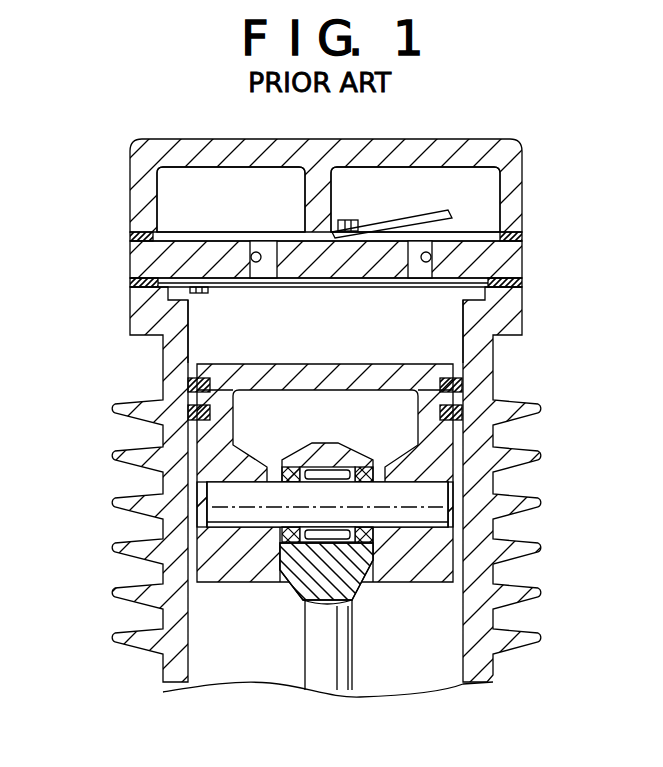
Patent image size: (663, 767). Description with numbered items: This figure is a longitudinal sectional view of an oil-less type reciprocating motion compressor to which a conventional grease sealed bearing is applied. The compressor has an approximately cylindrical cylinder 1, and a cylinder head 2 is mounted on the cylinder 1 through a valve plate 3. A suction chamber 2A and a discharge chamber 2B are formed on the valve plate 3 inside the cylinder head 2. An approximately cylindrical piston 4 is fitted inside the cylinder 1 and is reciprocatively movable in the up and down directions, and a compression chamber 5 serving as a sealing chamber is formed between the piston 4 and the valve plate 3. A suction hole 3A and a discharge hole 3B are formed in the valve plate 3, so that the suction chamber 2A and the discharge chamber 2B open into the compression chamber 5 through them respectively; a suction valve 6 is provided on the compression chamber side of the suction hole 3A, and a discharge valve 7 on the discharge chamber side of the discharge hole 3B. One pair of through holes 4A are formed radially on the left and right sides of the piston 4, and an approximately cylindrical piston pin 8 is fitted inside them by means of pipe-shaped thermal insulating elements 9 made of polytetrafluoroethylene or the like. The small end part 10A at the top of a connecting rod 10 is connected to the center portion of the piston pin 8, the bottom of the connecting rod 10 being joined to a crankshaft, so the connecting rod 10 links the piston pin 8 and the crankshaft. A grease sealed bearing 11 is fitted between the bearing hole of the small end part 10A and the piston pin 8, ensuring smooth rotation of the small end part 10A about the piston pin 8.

The cylinder 1 is at (483, 623).
The cylinder head 2 is at (386, 150).
The suction chamber 2A is at (175, 183).
The discharge chamber 2B is at (478, 204).
The valve plate 3 is at (142, 267).
The suction hole 3A is at (251, 257).
The discharge hole 3B is at (431, 257).
The piston 4 is at (397, 367).
The through holes 4A is at (220, 512).
The compression chamber 5 is at (430, 317).
The suction valve 6 is at (256, 284).
The discharge valve 7 is at (433, 210).
The piston pin 8 is at (418, 493).
The thermal insulating elements 9 is at (433, 458).
The connecting rod 10 is at (313, 660).
The small end part 10A is at (380, 562).
The grease sealed bearing 11 is at (320, 460).